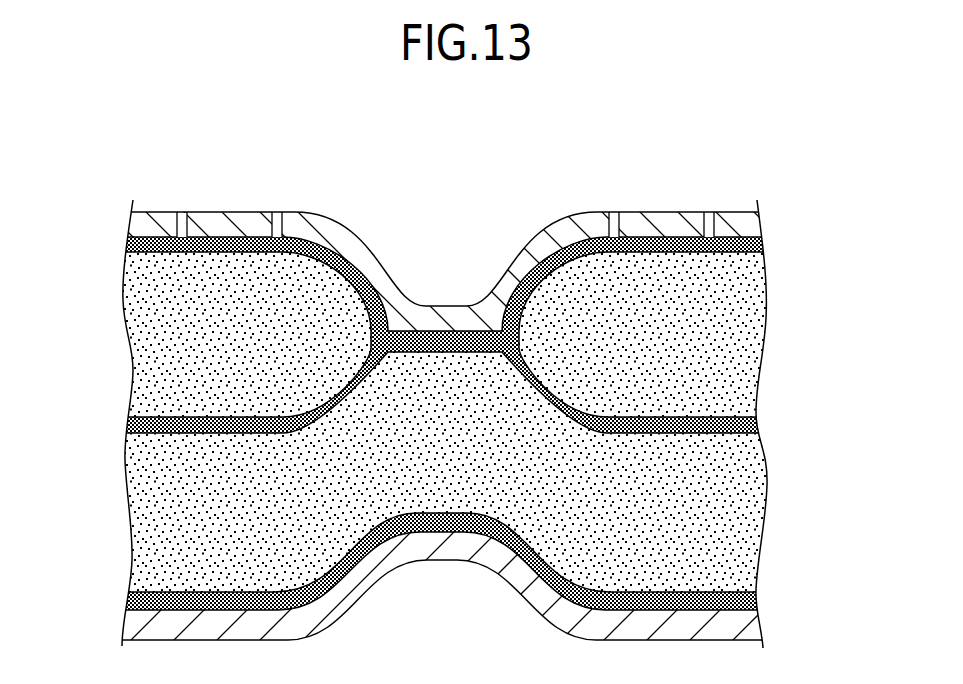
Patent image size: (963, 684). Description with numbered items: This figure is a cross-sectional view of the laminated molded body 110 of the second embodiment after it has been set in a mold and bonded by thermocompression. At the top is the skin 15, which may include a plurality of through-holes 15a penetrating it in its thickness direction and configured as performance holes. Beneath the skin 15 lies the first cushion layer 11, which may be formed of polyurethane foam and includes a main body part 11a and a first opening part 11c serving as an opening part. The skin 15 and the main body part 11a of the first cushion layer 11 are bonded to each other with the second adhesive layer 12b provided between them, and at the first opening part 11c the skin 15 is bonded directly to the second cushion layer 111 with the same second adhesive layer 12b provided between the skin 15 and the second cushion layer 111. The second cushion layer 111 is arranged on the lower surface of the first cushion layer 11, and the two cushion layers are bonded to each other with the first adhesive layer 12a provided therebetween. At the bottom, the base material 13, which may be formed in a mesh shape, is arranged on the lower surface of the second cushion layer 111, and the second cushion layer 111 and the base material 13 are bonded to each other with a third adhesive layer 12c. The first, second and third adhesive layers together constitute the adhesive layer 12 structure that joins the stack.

The laminated molded body 110 is at (459, 194).
The first cushion layer 11 is at (442, 277).
The main body part 11a is at (212, 371).
The first opening part 11c is at (376, 328).
The second cushion layer 111 is at (763, 523).
The adhesive layer 12 is at (516, 423).
The first adhesive layer 12a is at (762, 425).
The second adhesive layer 12b is at (762, 247).
The third adhesive layer 12c is at (762, 606).
The base material 13 is at (763, 627).
The skin 15 is at (760, 223).
The through-holes 15a is at (180, 229).